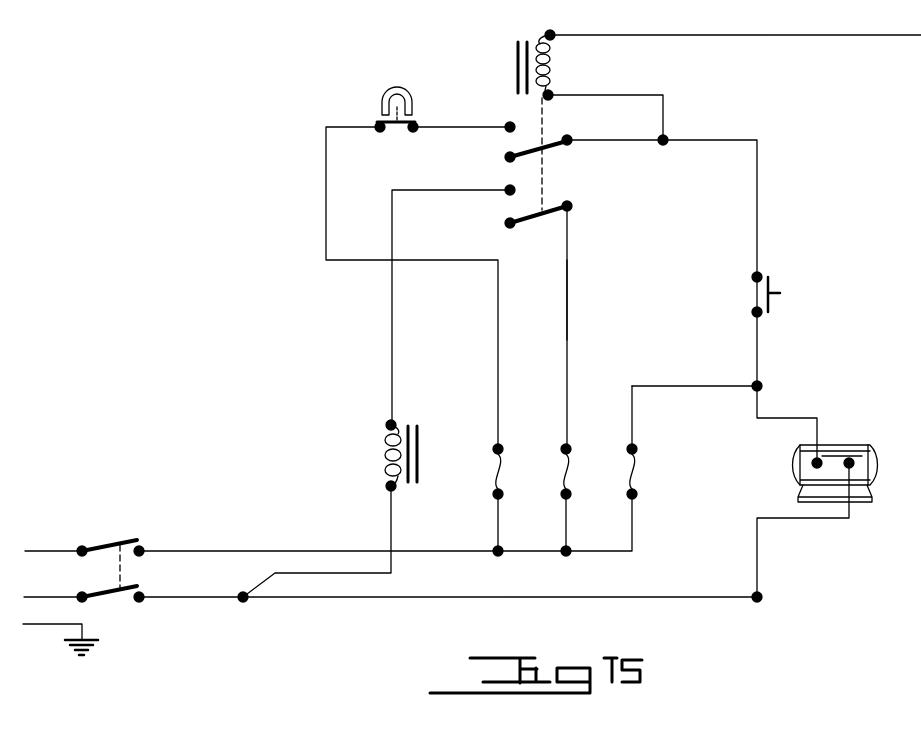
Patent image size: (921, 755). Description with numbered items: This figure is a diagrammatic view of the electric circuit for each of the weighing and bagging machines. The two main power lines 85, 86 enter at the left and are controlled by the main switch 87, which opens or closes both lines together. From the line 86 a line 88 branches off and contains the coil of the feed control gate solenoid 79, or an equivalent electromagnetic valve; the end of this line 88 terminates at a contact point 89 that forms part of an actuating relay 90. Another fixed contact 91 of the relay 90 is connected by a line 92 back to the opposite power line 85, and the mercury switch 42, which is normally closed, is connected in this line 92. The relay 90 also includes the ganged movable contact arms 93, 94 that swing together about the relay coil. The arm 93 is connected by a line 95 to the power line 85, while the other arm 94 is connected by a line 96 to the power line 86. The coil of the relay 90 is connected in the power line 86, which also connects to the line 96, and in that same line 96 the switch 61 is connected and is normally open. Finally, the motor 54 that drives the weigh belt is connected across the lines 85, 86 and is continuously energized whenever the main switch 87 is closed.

The mercury switch 42 is at (385, 94).
The motor 54 is at (853, 446).
The switch 61 is at (762, 314).
The feed control gate solenoid 79 is at (390, 434).
The main power line 85 is at (36, 551).
The main power line 86 is at (36, 597).
The main switch 87 is at (108, 553).
The line 88 is at (391, 521).
The contact point 89 is at (505, 189).
The actuating relay 90 is at (498, 157).
The fixed contact 91 is at (508, 124).
The line 92 is at (326, 165).
The movable contact arm 93 is at (528, 214).
The movable contact arm 94 is at (553, 145).
The line 95 is at (567, 298).
The line 96 is at (637, 142).